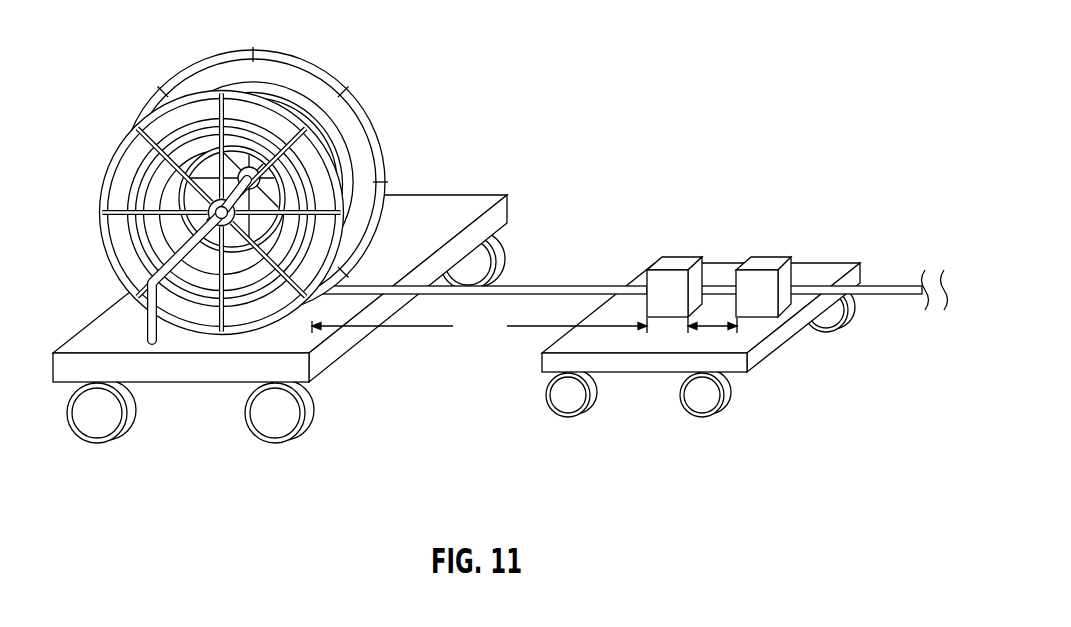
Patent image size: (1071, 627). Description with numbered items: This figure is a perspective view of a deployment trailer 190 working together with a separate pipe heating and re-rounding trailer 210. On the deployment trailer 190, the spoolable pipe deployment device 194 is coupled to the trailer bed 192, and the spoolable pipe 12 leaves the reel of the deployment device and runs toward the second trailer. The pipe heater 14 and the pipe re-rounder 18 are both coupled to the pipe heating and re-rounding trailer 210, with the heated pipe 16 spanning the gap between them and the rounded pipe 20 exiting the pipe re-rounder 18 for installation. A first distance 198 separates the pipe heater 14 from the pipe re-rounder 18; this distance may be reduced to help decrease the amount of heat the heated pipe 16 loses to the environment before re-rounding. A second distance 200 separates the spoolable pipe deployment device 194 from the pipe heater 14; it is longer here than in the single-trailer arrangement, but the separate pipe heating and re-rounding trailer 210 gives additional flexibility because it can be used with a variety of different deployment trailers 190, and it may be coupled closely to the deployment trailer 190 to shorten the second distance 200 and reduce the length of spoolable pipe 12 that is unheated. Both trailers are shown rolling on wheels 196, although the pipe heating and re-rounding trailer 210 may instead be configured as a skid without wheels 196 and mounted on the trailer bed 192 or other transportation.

The spoolable pipe 12 is at (542, 285).
The pipe heater 14 is at (690, 255).
The heated pipe 16 is at (720, 285).
The pipe re-rounder 18 is at (780, 256).
The rounded pipe 20 is at (877, 297).
The deployment trailer 190 is at (286, 230).
The trailer bed 192 is at (481, 193).
The spoolable pipe deployment device 194 is at (108, 138).
The wheels 196 is at (95, 443).
The first distance 198 is at (713, 328).
The second distance 200 is at (479, 326).
The pipe heating and re-rounding trailer 210 is at (800, 152).